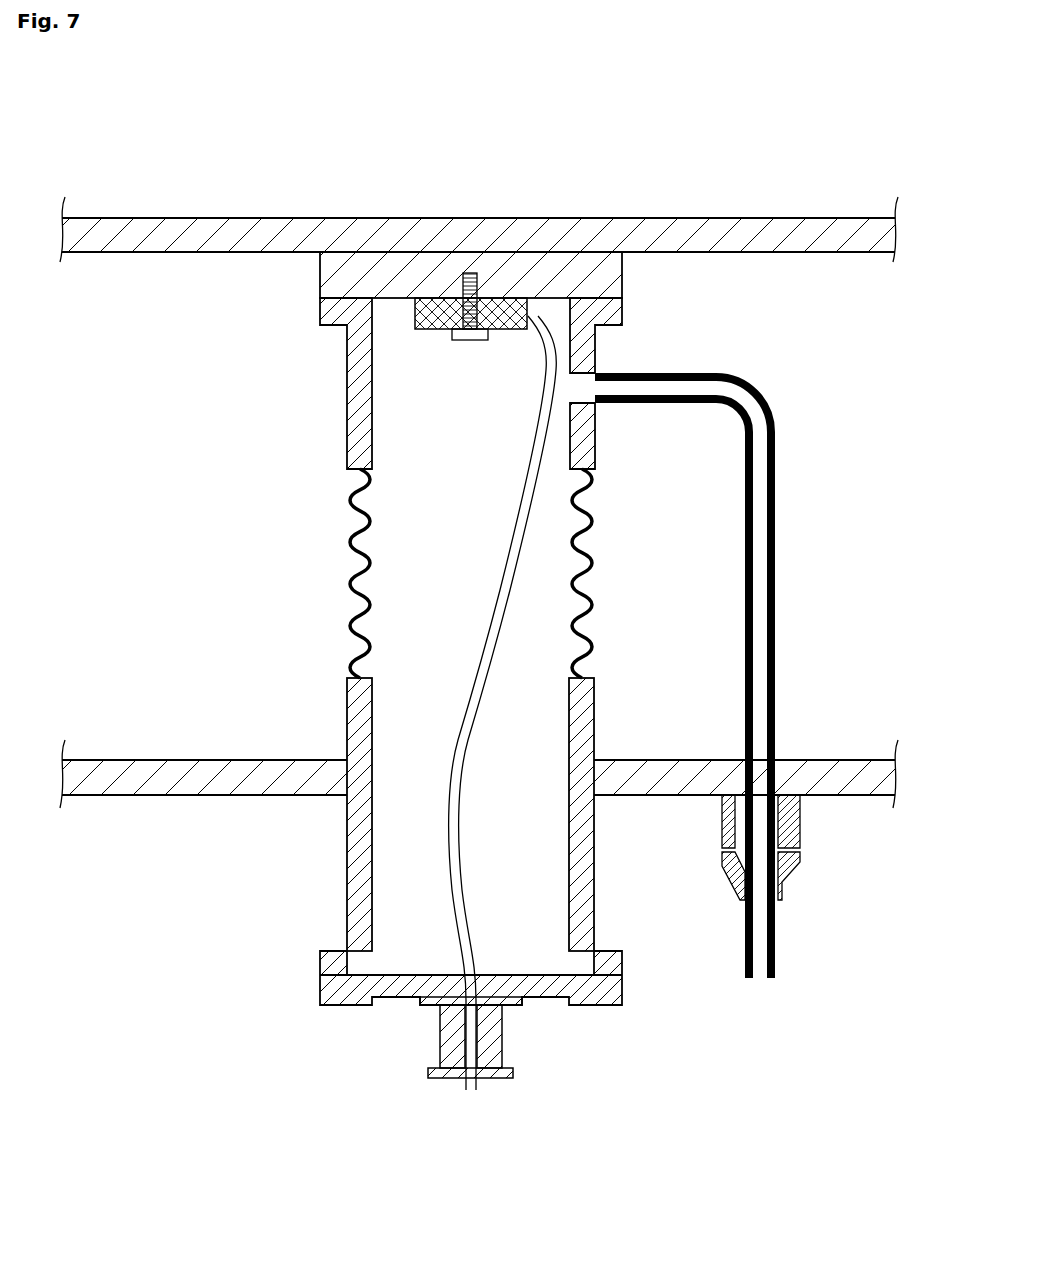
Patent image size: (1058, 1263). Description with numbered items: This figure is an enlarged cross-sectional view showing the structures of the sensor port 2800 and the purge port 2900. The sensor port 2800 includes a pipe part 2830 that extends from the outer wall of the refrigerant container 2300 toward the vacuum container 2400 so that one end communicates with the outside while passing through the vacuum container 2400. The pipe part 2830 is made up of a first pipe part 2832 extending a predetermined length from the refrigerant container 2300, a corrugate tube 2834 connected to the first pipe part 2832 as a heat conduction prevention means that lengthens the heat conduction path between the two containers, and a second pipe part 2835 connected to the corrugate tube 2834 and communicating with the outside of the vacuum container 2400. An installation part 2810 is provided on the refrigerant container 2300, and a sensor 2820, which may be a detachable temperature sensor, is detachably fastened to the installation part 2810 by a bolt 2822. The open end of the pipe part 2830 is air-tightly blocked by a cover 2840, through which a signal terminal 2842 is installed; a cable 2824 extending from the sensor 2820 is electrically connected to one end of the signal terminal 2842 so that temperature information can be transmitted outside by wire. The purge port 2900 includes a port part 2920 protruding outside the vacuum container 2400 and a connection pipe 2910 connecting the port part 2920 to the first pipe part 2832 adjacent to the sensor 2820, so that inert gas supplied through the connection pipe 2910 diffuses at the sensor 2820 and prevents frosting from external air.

The refrigerant container 2300 is at (157, 222).
The vacuum container 2400 is at (105, 758).
The sensor port 2800 is at (296, 1036).
The installation part 2810 is at (437, 270).
The sensor 2820 is at (506, 298).
The bolt 2822 is at (468, 342).
The cable 2824 is at (516, 564).
The pipe part 2830 is at (357, 624).
The first pipe part 2832 is at (346, 390).
The corrugate tube 2834 is at (352, 565).
The second pipe part 2835 is at (396, 814).
The cover 2840 is at (347, 1005).
The signal terminal 2842 is at (470, 1079).
The purge port 2900 is at (812, 880).
The connection pipe 2910 is at (672, 373).
The port part 2920 is at (737, 870).